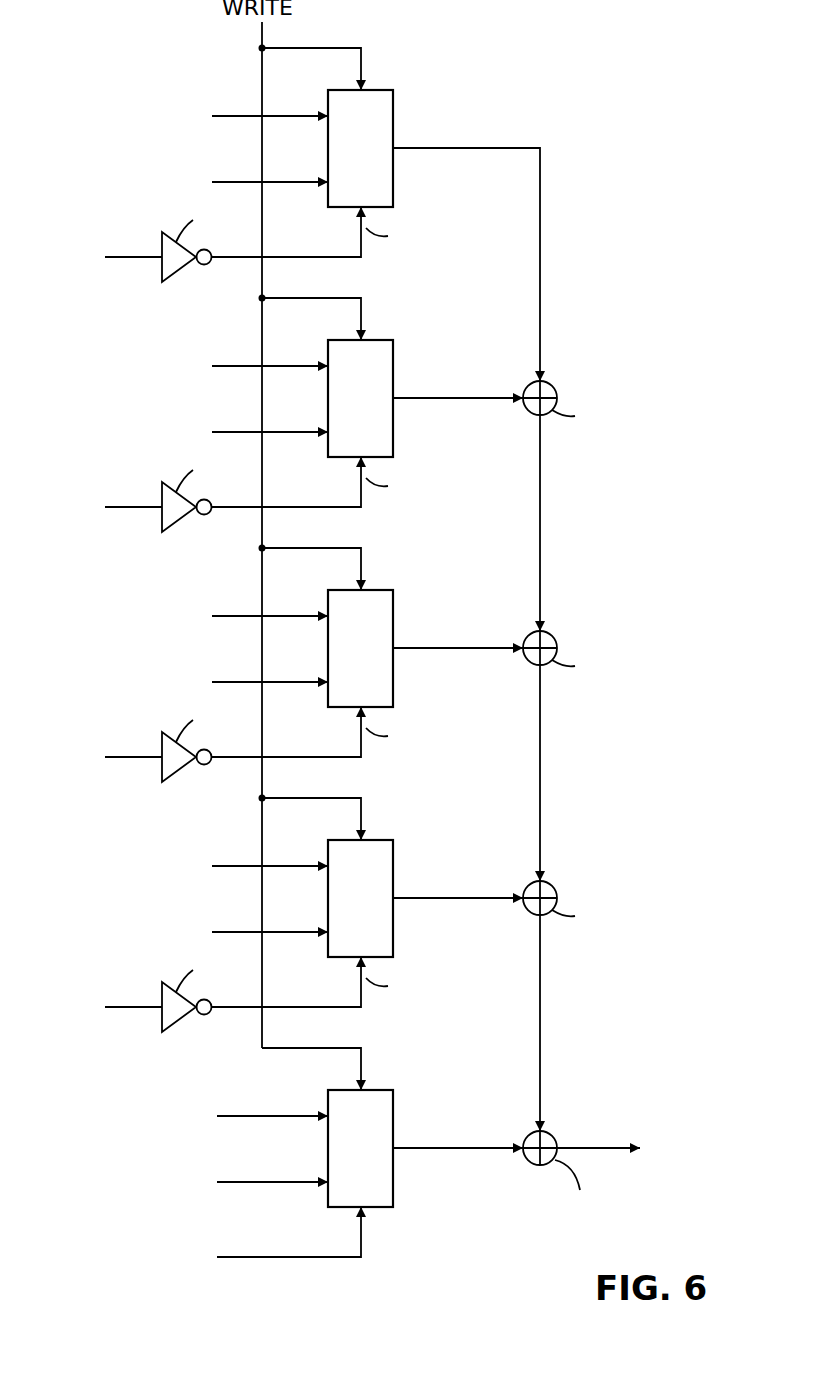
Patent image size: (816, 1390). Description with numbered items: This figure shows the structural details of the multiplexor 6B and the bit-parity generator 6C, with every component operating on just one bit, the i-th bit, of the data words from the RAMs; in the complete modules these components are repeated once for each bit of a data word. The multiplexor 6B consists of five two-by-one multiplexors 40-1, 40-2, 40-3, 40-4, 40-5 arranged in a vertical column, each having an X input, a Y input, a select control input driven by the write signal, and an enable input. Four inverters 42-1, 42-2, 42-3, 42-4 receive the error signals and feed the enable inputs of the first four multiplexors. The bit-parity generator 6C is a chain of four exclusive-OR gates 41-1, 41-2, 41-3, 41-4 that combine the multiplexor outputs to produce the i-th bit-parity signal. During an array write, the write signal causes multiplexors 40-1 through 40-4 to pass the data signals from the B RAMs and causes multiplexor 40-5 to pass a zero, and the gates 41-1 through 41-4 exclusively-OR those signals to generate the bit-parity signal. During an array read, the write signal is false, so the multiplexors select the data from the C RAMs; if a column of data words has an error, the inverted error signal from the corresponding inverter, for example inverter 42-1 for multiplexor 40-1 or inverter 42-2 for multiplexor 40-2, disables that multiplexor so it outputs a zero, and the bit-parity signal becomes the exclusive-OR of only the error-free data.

The 2 × 1 multiplexor 40-1 is at (394, 32).
The 2 × 1 multiplexor 40-2 is at (328, 401).
The 2 × 1 multiplexor 40-3 is at (328, 651).
The 2 × 1 multiplexor 40-4 is at (328, 901).
The 2 × 1 multiplexor 40-5 is at (328, 1159).
The exclusive-OR gate 41-1 is at (553, 386).
The exclusive-OR gate 41-2 is at (553, 636).
The exclusive-OR gate 41-3 is at (553, 886).
The exclusive-OR gate 41-4 is at (550, 1135).
The inverter 42-1 is at (162, 192).
The inverter 42-2 is at (142, 516).
The inverter 42-3 is at (142, 766).
The inverter 42-4 is at (142, 1016).
The multiplexor 6B is at (373, 1275).
The bit-parity generator 6C is at (537, 1215).